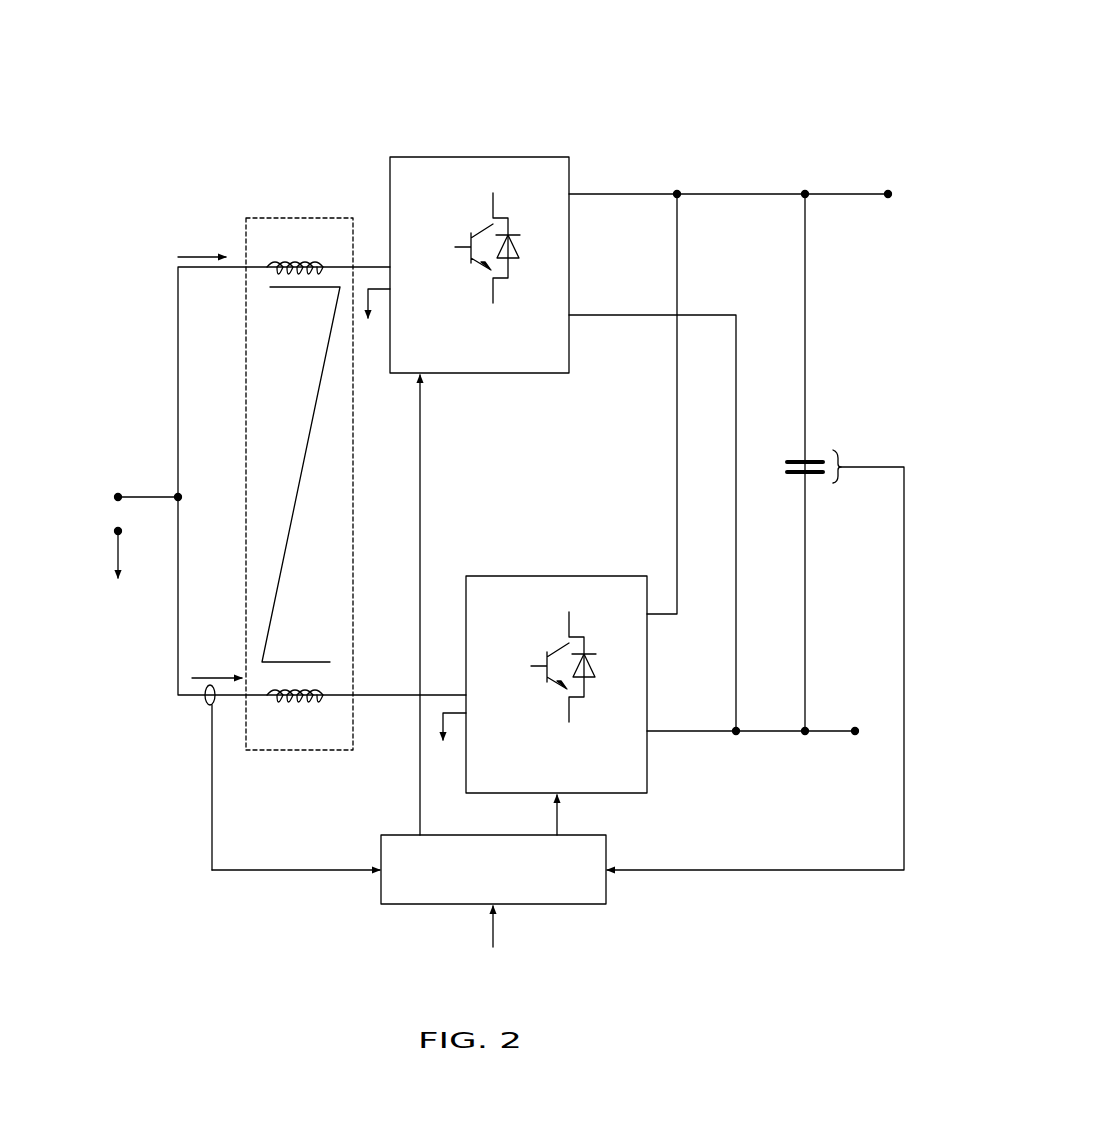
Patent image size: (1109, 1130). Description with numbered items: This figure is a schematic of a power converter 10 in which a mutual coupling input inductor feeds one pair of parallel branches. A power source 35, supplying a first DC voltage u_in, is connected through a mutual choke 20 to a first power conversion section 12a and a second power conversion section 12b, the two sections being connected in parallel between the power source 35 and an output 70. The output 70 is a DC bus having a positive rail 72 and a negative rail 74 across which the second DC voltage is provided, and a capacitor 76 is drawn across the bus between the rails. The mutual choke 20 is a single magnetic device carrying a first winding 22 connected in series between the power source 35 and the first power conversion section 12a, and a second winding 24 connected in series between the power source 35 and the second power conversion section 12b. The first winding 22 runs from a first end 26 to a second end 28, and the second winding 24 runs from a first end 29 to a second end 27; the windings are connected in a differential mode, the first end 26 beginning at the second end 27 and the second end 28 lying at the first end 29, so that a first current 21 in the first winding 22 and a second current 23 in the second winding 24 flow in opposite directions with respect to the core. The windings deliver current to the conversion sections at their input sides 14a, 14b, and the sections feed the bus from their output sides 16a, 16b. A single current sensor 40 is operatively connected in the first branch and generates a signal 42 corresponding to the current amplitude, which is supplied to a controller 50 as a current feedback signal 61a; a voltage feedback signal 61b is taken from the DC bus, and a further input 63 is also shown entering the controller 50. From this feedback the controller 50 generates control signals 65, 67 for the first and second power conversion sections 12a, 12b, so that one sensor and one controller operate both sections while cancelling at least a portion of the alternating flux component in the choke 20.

The power converter 10 is at (728, 78).
The first power conversion section 12a is at (552, 576).
The second power conversion section 12b is at (480, 157).
The first converter input 14a is at (453, 638).
The second converter input 14b is at (384, 246).
The first converter output 16a is at (662, 606).
The second converter output 16b is at (583, 186).
The mutual choke 20 is at (288, 215).
The first current 21 is at (206, 677).
The first winding 22 is at (302, 712).
The second current 23 is at (190, 256).
The second winding 24 is at (283, 257).
The first end of first winding 26 is at (242, 708).
The second end of second winding 27 is at (361, 233).
The second end of first winding 28 is at (371, 704).
The first end of second winding 29 is at (243, 262).
The power source 35 is at (100, 455).
The current sensor 40 is at (200, 708).
The signal 42 is at (264, 873).
The controller 50 is at (563, 905).
The current feedback signal 61a is at (332, 873).
The voltage feedback signal 61b is at (757, 873).
The reference input signal 63 is at (490, 930).
The control signal 65 is at (562, 817).
The control signal 67 is at (423, 812).
The output 70 is at (862, 172).
The positive rail 72 is at (738, 194).
The negative rail 74 is at (766, 731).
The DC link capacitor 76 is at (796, 482).